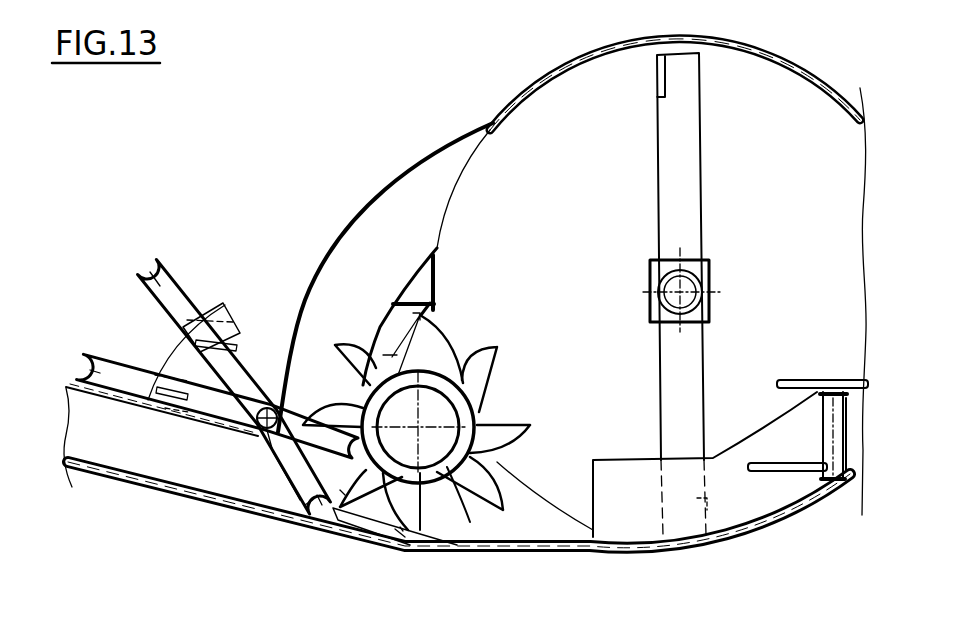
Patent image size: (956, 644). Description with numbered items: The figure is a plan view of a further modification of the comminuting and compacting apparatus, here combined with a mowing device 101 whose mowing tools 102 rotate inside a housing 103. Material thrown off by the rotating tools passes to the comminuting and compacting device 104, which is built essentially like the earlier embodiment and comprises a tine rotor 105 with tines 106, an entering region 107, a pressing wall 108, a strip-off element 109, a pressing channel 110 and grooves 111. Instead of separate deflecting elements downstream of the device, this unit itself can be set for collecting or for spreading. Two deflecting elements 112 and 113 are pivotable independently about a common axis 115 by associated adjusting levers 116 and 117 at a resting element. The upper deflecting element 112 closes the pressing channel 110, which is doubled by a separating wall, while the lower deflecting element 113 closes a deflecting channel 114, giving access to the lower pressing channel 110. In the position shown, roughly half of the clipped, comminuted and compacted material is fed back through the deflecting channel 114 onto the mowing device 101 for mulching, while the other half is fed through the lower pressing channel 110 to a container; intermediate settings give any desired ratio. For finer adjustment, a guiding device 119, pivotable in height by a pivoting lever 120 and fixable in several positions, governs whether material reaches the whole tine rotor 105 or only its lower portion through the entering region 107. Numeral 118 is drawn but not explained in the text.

The mowing device 101 is at (470, 120).
The mowing tools 102 is at (675, 135).
The housing 103 is at (503, 113).
The comminuting and compacting device 104 is at (433, 554).
The tine rotor 105 is at (470, 493).
The tines 106 is at (525, 513).
The entering region 107 is at (540, 560).
The pressing wall 108 is at (340, 490).
The strip-off element 109 is at (323, 257).
The pressing channel 110 is at (137, 455).
The grooves 111 is at (397, 530).
The upper deflecting element 112 is at (273, 452).
The lower deflecting element 113 is at (305, 505).
The deflecting channel 114 is at (405, 228).
The common axis 115 is at (268, 407).
The adjusting lever 116 is at (99, 372).
The adjusting lever 117 is at (150, 270).
The slot 118 is at (177, 372).
The guiding device 119 is at (783, 490).
The pivoting lever 120 is at (862, 462).